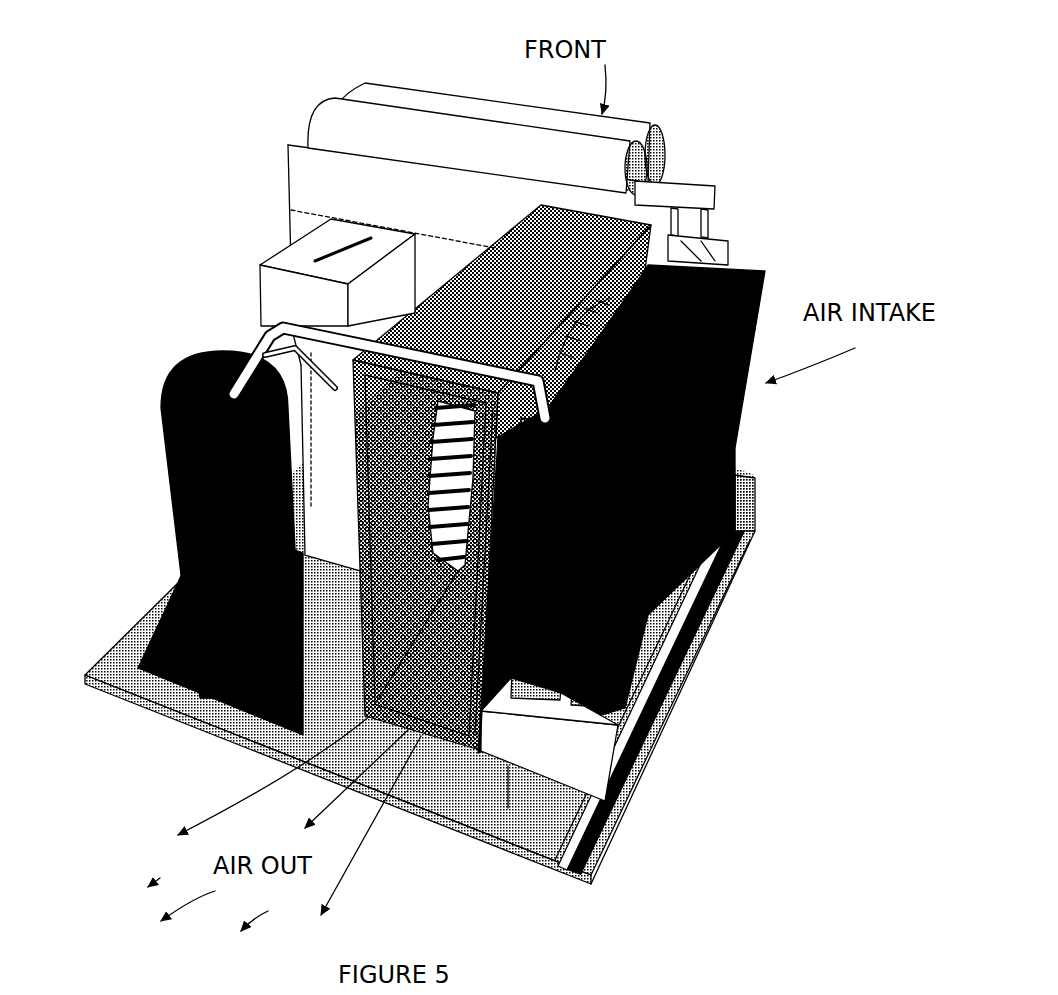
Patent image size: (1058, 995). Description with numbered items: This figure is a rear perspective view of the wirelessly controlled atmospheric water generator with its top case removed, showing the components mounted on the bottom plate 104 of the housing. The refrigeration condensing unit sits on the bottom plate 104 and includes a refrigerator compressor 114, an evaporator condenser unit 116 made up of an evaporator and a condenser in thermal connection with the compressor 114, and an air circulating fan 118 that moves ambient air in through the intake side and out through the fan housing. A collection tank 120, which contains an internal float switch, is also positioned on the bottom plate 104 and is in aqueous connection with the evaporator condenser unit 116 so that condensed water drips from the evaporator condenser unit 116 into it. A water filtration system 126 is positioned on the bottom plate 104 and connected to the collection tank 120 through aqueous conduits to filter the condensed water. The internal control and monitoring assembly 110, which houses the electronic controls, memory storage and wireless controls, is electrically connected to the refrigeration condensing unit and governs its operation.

The bottom plate 104 is at (66, 676).
The internal control and monitoring assembly 110 is at (273, 277).
The refrigerator compressor 114 is at (133, 441).
The evaporator condenser unit 116 is at (737, 447).
The air circulating fan 118 is at (415, 752).
The collection tank 120 is at (660, 714).
The water filtration system 126 is at (350, 108).